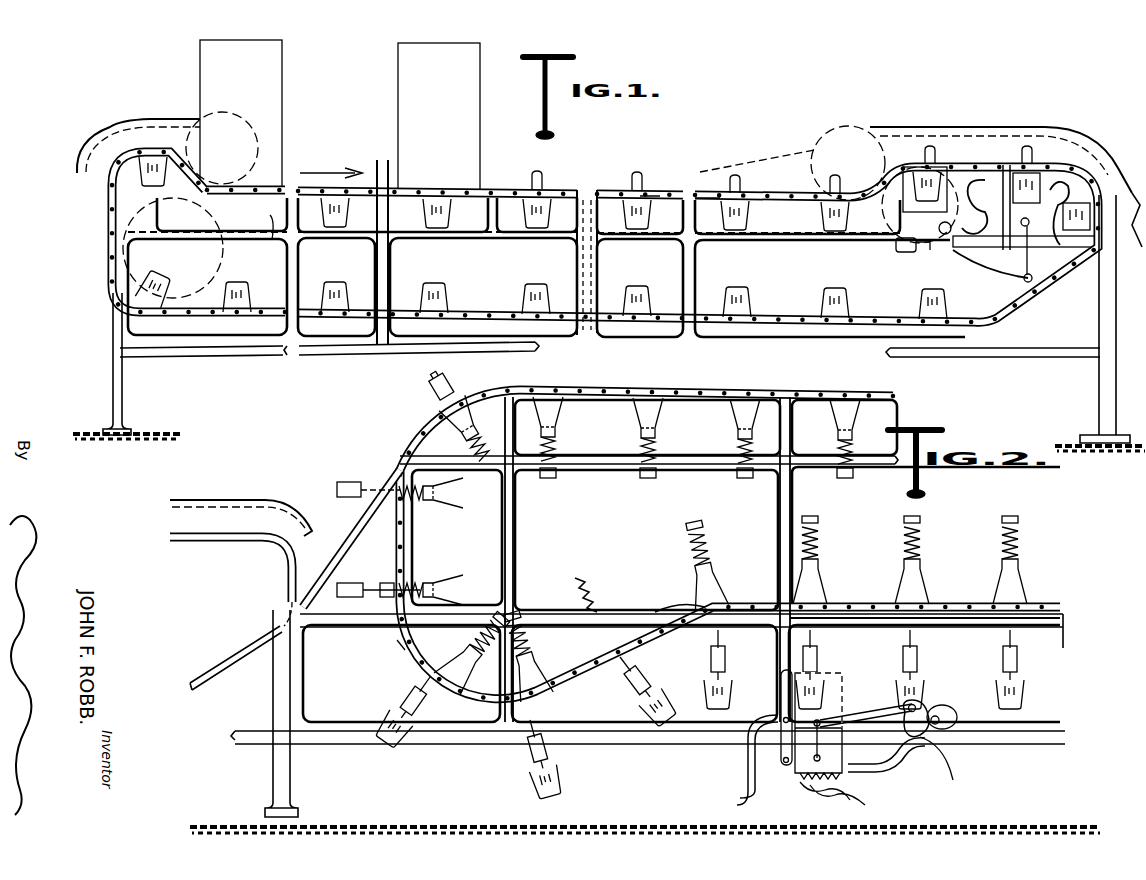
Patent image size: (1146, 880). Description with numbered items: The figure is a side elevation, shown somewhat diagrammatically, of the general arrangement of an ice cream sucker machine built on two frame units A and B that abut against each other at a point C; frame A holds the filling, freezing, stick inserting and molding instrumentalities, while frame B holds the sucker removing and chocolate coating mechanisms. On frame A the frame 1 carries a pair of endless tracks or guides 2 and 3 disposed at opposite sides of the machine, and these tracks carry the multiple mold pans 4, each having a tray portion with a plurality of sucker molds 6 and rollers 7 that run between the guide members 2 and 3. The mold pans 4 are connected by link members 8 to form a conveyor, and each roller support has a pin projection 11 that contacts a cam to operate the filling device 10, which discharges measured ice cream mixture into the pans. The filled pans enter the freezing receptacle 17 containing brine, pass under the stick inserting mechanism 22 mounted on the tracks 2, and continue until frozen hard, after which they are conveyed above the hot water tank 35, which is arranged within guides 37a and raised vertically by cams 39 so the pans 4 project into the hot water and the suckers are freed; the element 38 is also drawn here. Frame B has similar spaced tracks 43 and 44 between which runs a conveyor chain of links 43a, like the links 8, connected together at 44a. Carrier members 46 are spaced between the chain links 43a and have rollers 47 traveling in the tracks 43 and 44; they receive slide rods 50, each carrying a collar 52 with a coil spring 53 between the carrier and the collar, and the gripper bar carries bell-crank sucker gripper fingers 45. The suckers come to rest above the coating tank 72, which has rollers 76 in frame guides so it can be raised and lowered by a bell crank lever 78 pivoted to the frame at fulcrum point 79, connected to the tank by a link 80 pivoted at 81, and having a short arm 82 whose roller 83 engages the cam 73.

In FIG. 1, the frame 1 is at (120, 343).
In FIG. 2, the frame 1 is at (240, 622).
In FIG. 1, the endless track or guide 2 is at (493, 190).
In FIG. 2, the endless track or guide 2 is at (172, 505).
In FIG. 1, the endless track or guide 3 is at (493, 238).
In FIG. 2, the endless track or guide 3 is at (190, 548).
In FIG. 1, the mold pan 4 is at (338, 222).
In FIG. 1, the sucker mold 6 is at (446, 283).
In FIG. 1, the roller 7 is at (725, 192).
In FIG. 1, the link member 8 is at (560, 193).
In FIG. 1, the filling device 10 is at (272, 87).
In FIG. 1, the pin projection 11 is at (648, 195).
In FIG. 1, the freezing receptacle 17 is at (268, 241).
In FIG. 1, the stick inserting mechanism 22 is at (400, 110).
In FIG. 1, the hot water tank 35 is at (1035, 205).
In FIG. 1, the guide 37a is at (990, 190).
In FIG. 1, the lever arm 38 is at (985, 265).
In FIG. 1, the cam 39 is at (933, 258).
In FIG. 2, the track or guide 43 is at (408, 525).
In FIG. 2, the conveyor chain link 43a is at (865, 391).
In FIG. 2, the track or guide 44 is at (702, 386).
In FIG. 2, the link connection 44a is at (382, 650).
In FIG. 2, the sucker gripper finger 45 is at (349, 483).
In FIG. 2, the carrier member 46 is at (570, 410).
In FIG. 2, the roller 47 is at (665, 596).
In FIG. 2, the slide rod 50 is at (590, 585).
In FIG. 2, the collar 52 is at (585, 565).
In FIG. 2, the coil spring 53 is at (595, 600).
In FIG. 2, the coating tank 72 is at (800, 778).
In FIG. 2, the cam 73 is at (940, 700).
In FIG. 2, the roller 76 is at (780, 716).
In FIG. 2, the bell crank lever 78 is at (868, 710).
In FIG. 2, the fulcrum point 79 is at (918, 703).
In FIG. 2, the link 80 is at (822, 757).
In FIG. 2, the pivot 81 is at (815, 797).
In FIG. 2, the short arm 82 is at (909, 768).
In FIG. 2, the roller 83 is at (957, 717).
In FIG. 1, the frame unit A is at (120, 322).
In FIG. 2, the frame unit A is at (275, 686).
In FIG. 1, the frame unit B is at (1102, 394).
In FIG. 2, the frame unit B is at (305, 672).
In FIG. 1, the abutment point C is at (1098, 372).
In FIG. 2, the abutment point C is at (275, 757).